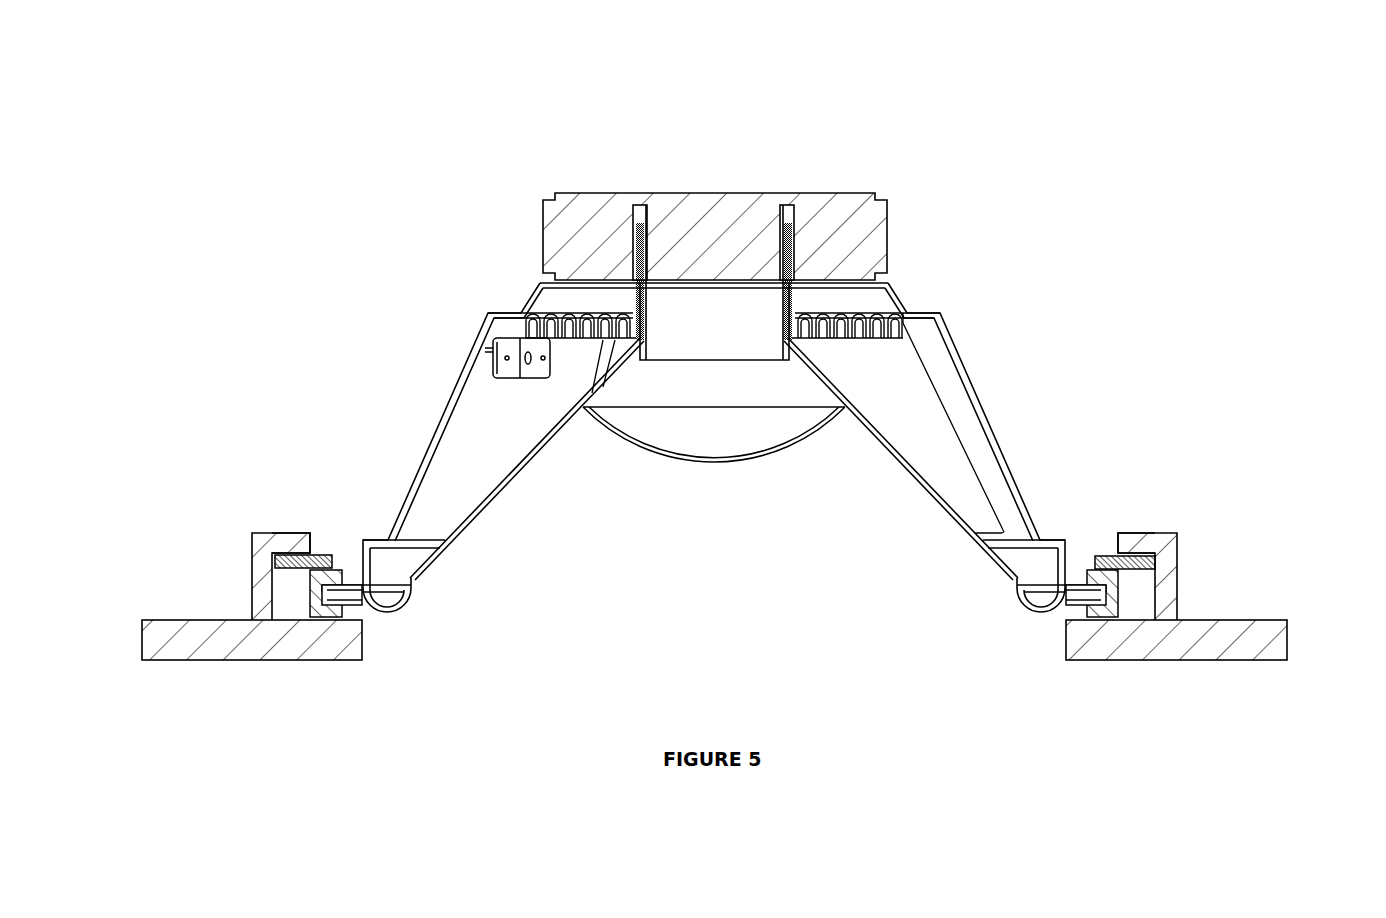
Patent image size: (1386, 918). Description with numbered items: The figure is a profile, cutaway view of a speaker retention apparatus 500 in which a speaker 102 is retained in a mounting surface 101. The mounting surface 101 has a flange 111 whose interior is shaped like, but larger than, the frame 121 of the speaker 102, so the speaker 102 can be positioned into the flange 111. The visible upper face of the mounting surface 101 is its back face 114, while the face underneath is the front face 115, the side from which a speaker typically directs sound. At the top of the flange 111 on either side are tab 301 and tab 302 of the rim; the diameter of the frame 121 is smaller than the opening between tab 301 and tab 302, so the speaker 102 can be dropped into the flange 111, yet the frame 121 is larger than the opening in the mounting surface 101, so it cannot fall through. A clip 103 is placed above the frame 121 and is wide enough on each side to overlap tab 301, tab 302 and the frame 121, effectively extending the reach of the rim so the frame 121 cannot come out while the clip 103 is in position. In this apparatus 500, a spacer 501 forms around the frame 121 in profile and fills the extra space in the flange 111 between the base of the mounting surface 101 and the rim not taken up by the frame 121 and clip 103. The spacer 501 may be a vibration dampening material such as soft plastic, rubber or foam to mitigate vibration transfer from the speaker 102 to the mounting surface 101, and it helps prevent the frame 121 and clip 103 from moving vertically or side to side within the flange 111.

The speaker retention apparatus 500 is at (154, 64).
The speaker 102 is at (737, 332).
The mounting surface 101 is at (148, 621).
The flange 111 is at (252, 586).
The tab 301 is at (304, 533).
The clip 103 is at (319, 557).
The front face 115 is at (1256, 694).
The back face 114 is at (1262, 584).
The tab 302 is at (1139, 533).
The spacer 501 is at (1119, 602).
The frame 121 is at (1081, 583).